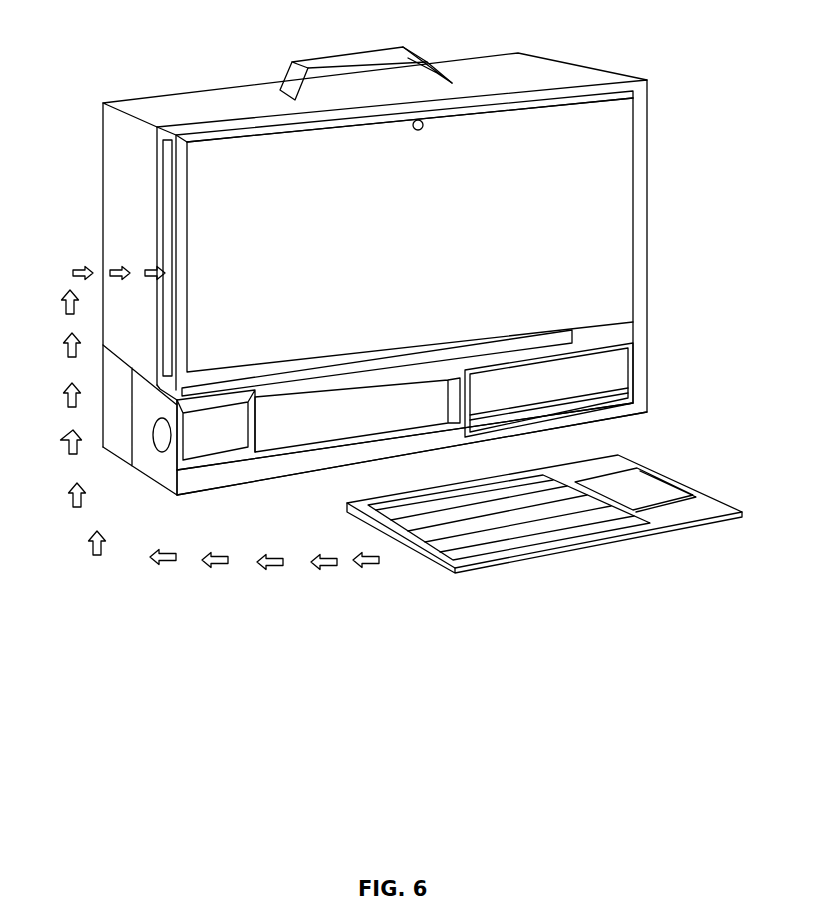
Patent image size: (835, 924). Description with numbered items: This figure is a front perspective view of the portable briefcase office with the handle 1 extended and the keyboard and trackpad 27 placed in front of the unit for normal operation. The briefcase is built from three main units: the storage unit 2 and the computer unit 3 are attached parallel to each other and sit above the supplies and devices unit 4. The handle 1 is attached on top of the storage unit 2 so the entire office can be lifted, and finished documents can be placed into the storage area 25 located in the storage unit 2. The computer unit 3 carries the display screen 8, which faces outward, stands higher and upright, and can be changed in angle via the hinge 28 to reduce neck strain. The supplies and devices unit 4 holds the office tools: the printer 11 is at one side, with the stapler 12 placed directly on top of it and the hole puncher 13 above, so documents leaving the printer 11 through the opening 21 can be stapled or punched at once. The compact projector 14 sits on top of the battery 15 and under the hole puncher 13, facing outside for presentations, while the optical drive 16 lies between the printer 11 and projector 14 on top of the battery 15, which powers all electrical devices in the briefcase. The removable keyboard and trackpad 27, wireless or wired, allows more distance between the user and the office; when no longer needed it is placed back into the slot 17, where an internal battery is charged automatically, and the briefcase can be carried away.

The handle 1 is at (355, 58).
The storage unit 2 is at (117, 135).
The computer unit 3 is at (643, 248).
The supplies and devices unit 4 is at (650, 417).
The display screen 8 is at (618, 167).
The printer 11 is at (620, 377).
The stapler 12 is at (627, 325).
The hole puncher 13 is at (160, 382).
The projector 14 is at (167, 432).
The battery 15 is at (217, 478).
The optical drive 16 is at (308, 430).
The slot 17 is at (168, 187).
The opening 21 is at (565, 410).
The storage area 25 is at (117, 212).
The keyboard and trackpad 27 is at (707, 508).
The hinge 28 is at (582, 97).